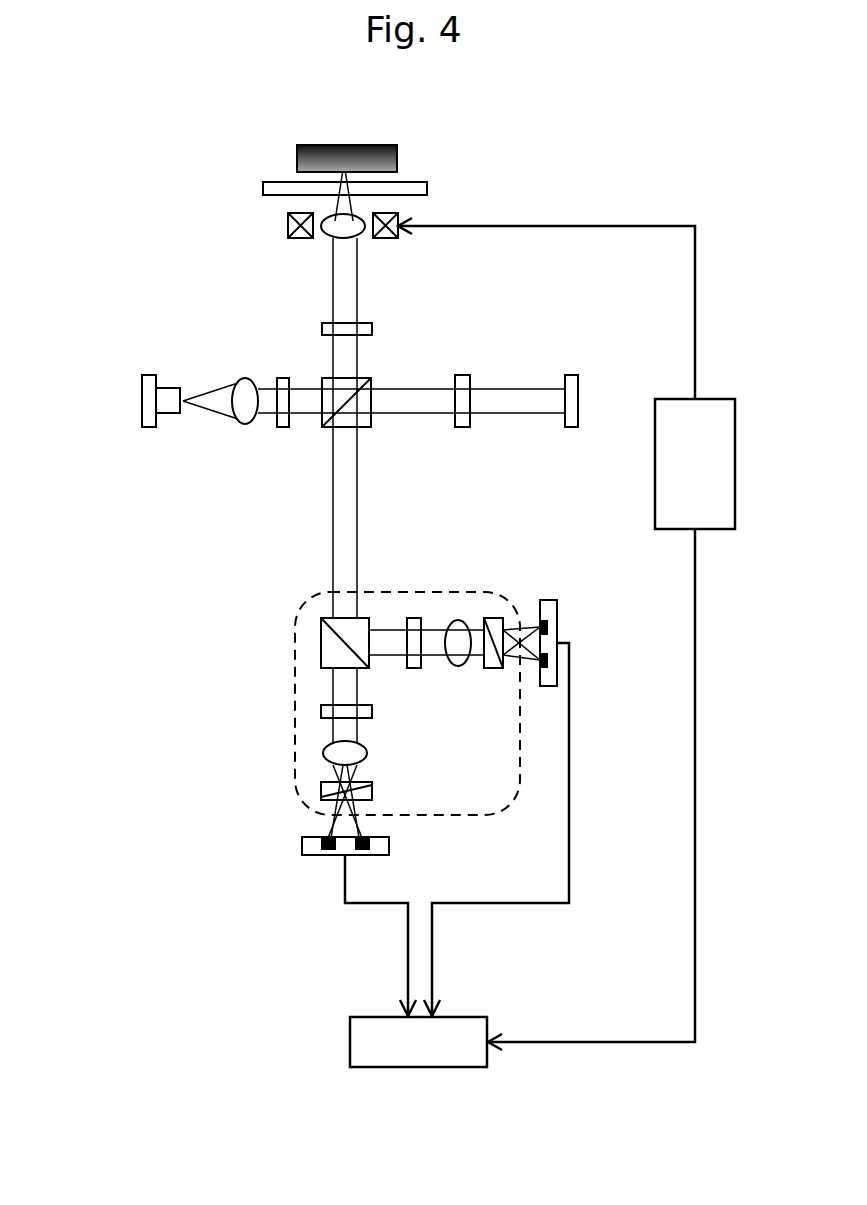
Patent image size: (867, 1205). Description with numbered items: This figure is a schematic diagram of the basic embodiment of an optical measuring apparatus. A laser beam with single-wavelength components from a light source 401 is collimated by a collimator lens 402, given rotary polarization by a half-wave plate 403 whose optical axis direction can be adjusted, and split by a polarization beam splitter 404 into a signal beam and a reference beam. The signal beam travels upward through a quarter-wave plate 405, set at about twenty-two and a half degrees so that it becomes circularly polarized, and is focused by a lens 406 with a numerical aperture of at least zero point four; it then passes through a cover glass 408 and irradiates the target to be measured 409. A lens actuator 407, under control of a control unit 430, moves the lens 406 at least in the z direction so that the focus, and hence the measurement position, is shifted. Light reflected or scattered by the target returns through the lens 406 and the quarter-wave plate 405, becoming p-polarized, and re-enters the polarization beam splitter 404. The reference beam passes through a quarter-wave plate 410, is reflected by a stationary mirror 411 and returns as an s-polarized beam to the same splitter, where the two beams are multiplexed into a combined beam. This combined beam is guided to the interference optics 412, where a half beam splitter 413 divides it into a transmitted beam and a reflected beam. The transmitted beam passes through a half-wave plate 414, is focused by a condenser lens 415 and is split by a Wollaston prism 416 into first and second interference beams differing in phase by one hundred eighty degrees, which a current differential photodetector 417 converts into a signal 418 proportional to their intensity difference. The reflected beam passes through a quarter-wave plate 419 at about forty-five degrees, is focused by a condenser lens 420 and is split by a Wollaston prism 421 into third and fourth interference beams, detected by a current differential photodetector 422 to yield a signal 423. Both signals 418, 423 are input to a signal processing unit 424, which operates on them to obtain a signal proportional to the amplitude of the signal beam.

The light source 401 is at (142, 393).
The collimator lens 402 is at (245, 383).
The λ/2 plate 403 is at (282, 427).
The polarization beam splitter 404 is at (322, 378).
The λ/4 plate 405 is at (322, 328).
The lens 406 is at (360, 236).
The lens actuator 407 is at (398, 213).
The cover glass 408 is at (263, 189).
The target to be measured 409 is at (297, 156).
The λ/4 plate 410 is at (462, 380).
The stationary mirror 411 is at (570, 380).
The interference optics 412 is at (510, 815).
The half beam splitter 413 is at (321, 638).
The λ/2 plate 414 is at (372, 710).
The condenser lens 415 is at (367, 752).
The Wollaston prism 416 is at (372, 790).
The current differential photodetector 417 is at (389, 846).
The signal 418 is at (347, 881).
The λ/4 plate 419 is at (412, 618).
The condenser lens 420 is at (458, 620).
The Wollaston prism 421 is at (494, 618).
The current differential photodetector 422 is at (550, 600).
The signal 423 is at (570, 673).
The signal processing unit 424 is at (350, 1042).
The control unit 430 is at (717, 399).